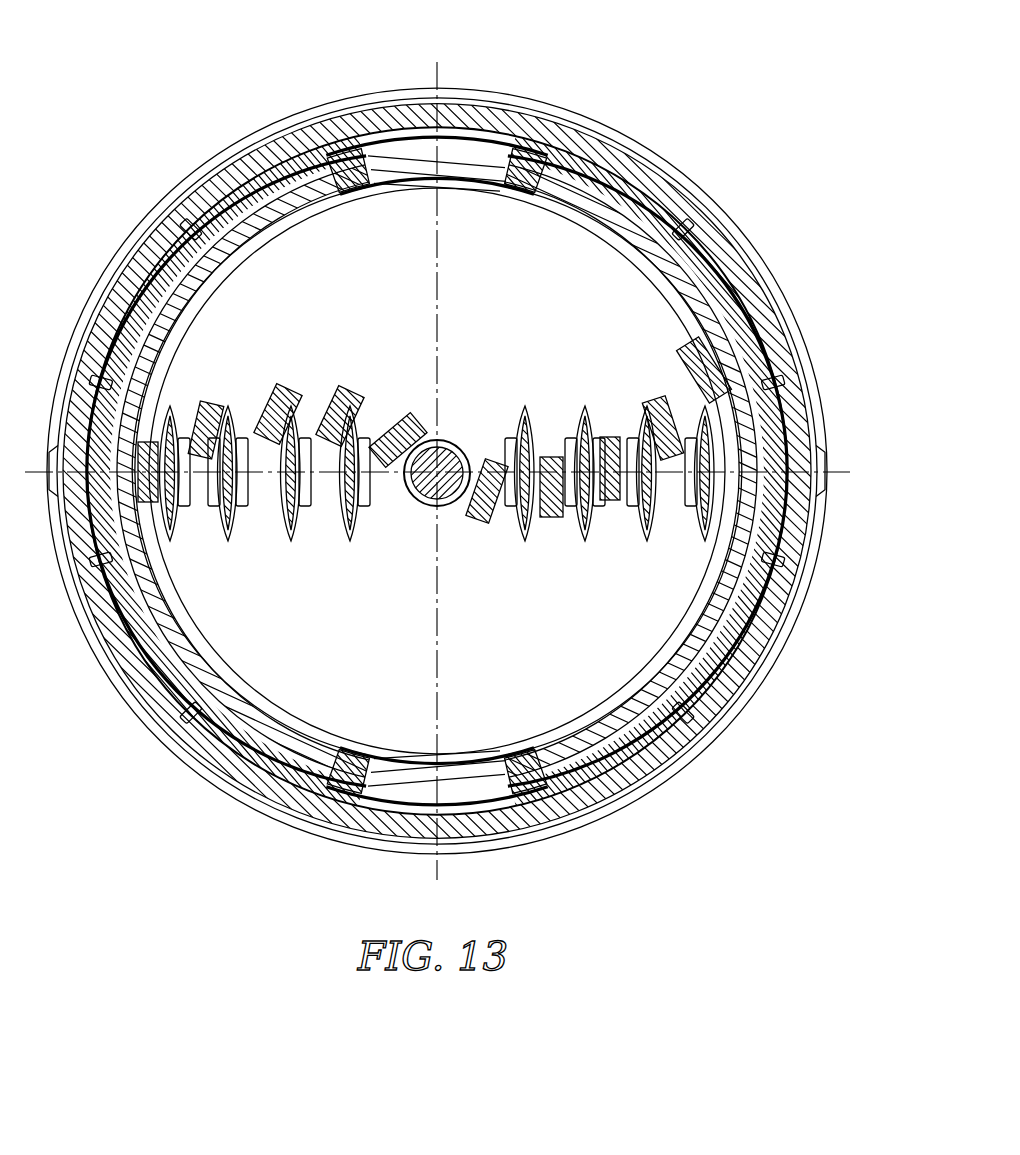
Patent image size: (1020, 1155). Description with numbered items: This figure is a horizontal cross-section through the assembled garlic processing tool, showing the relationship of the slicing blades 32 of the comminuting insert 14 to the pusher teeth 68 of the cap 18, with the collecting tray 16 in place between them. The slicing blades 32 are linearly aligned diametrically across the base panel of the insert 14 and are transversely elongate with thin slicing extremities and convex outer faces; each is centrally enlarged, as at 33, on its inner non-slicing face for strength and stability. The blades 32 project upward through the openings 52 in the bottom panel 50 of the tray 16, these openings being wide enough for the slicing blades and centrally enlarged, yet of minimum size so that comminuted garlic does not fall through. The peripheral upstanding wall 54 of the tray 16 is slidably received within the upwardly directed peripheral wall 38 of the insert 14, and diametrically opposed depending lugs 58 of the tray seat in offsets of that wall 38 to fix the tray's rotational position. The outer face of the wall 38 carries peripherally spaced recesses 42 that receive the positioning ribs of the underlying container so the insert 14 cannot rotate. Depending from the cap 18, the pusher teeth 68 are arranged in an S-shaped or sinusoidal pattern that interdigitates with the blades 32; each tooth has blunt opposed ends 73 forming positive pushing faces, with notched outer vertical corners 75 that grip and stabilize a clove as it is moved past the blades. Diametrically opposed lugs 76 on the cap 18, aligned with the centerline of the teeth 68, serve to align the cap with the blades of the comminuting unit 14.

The comminuting insert 14 is at (778, 666).
The collecting tray 16 is at (260, 748).
The cap 18 is at (808, 594).
The slicing blades 32 is at (283, 512).
The central enlargement of slicing blade 33 is at (508, 508).
The peripheral walls 38 is at (722, 272).
The recesses 42 is at (780, 388).
The bottom panel 50 is at (437, 471).
The openings 52 is at (390, 410).
The peripheral upstanding wall 54 is at (257, 725).
The depending lugs 58 is at (482, 152).
The pusher teeth 68 is at (335, 395).
The blunt opposed ends 73 is at (477, 517).
The notched outer vertical corners 75 is at (400, 408).
The lugs 76 is at (822, 472).